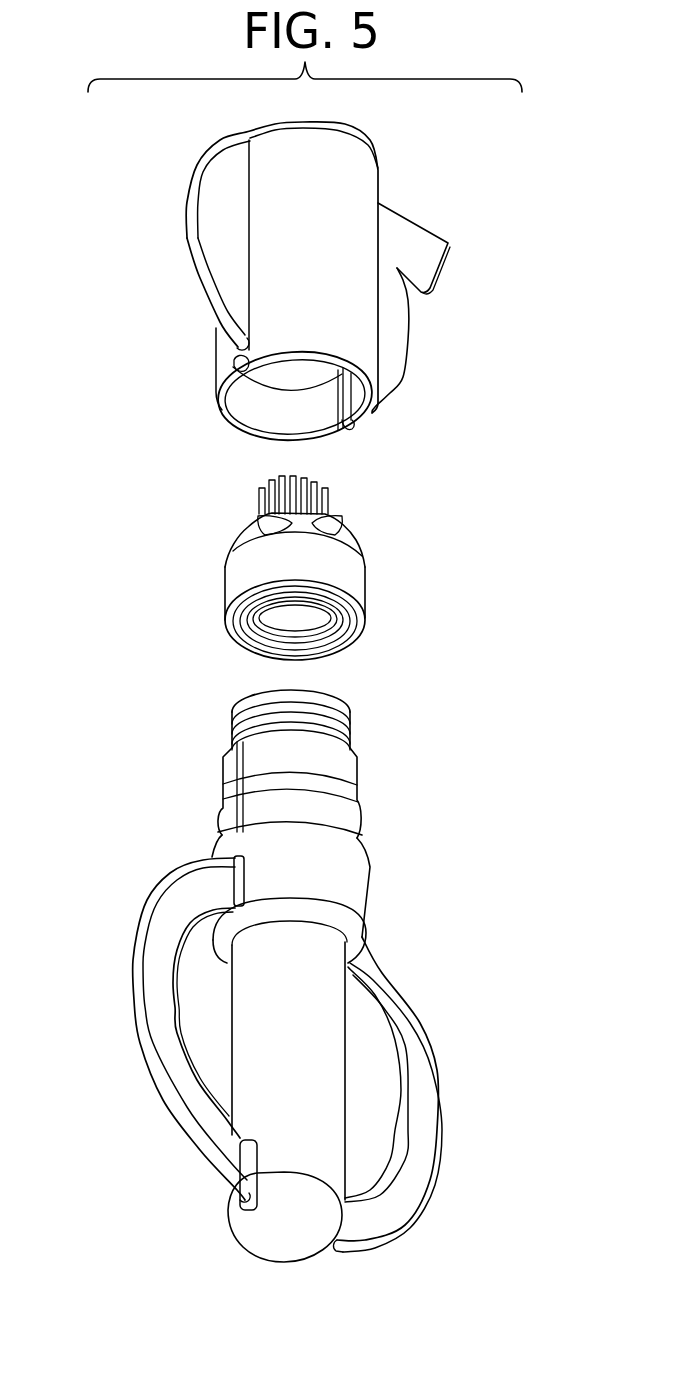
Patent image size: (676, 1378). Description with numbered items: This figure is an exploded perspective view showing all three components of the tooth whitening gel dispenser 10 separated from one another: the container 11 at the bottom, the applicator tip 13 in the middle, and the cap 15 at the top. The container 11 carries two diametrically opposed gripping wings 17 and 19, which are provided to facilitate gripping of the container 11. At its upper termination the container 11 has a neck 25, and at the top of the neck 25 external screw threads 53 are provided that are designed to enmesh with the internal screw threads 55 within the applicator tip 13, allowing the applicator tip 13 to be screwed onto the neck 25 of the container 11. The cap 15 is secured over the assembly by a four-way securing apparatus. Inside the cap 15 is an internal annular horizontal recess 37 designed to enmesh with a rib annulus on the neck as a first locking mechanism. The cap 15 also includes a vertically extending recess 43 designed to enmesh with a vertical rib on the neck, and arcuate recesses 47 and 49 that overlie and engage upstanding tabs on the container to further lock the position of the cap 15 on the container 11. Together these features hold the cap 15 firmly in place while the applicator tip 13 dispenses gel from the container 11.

The tooth whitening gel dispenser 10 is at (445, 615).
The container 11 is at (413, 938).
The applicator tip 13 is at (383, 560).
The cap 15 is at (435, 315).
The gripping wing 17 is at (160, 947).
The gripping wing 19 is at (417, 1083).
The neck 25 is at (372, 797).
The internal annular horizontal recess 37 is at (272, 387).
The vertically extending recess 43 is at (348, 400).
The arcuate recess 47 is at (236, 360).
The arcuate recess 49 is at (348, 428).
The external screw threads 53 is at (352, 730).
The internal screw threads 55 is at (261, 640).